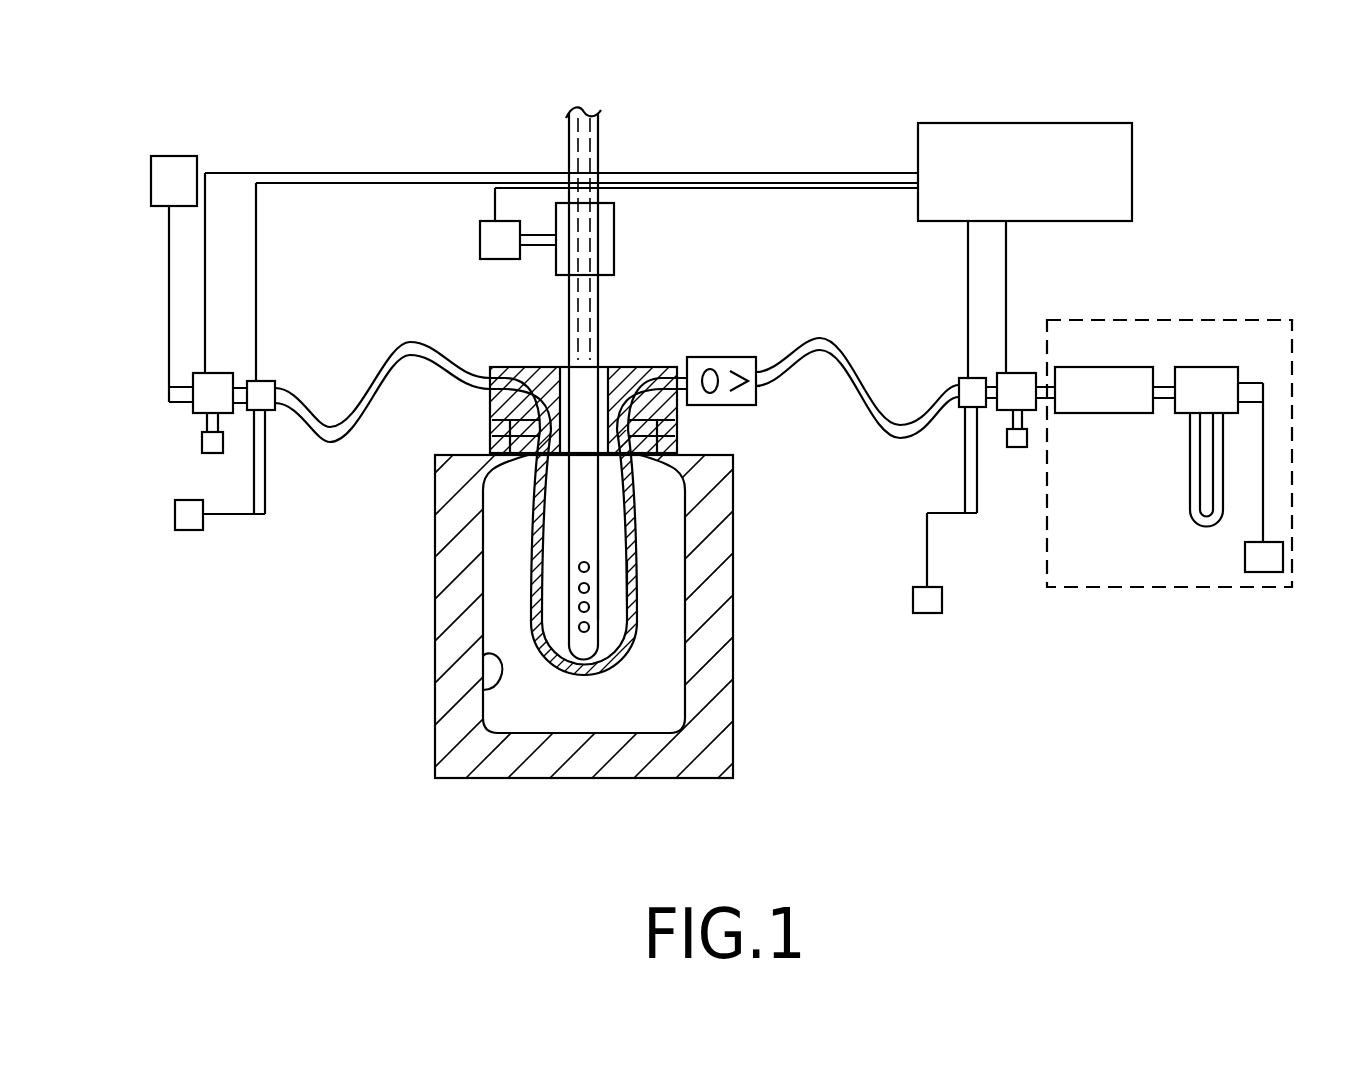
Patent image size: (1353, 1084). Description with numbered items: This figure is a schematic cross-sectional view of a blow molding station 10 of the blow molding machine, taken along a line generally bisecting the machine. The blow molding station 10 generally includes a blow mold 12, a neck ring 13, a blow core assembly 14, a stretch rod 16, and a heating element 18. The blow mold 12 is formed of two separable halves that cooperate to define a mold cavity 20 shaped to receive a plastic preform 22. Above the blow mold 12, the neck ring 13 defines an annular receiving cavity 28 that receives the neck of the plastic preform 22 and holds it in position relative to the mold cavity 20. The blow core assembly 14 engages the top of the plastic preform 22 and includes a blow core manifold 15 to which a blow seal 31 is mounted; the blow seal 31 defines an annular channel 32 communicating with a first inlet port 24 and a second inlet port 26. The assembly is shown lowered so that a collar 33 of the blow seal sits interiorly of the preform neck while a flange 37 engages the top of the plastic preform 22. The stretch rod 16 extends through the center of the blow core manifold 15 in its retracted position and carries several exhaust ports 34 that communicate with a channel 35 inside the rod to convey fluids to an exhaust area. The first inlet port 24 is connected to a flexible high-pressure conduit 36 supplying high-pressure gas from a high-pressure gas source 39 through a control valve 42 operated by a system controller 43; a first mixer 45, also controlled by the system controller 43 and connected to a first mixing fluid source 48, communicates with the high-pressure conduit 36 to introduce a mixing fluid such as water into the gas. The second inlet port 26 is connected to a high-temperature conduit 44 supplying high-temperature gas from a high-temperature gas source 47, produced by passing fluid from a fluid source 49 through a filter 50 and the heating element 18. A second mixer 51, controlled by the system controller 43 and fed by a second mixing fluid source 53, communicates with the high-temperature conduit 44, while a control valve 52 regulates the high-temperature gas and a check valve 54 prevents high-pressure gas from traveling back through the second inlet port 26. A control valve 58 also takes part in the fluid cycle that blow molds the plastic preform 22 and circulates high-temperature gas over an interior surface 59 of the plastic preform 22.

The blow molding station 10 is at (683, 152).
The blow mold 12 is at (423, 648).
The neck ring 13 is at (495, 440).
The blow core assembly 14 is at (541, 362).
The blow core manifold 15 is at (672, 360).
The stretch rod 16 is at (614, 606).
The heating element 18 is at (1103, 367).
The mold cavity 20 is at (483, 700).
The plastic preform 22 is at (530, 560).
The first inlet port 24 is at (480, 366).
The second inlet port 26 is at (715, 356).
The annular receiving cavity 28 is at (680, 447).
The blow seal 31 is at (680, 420).
The annular channel 32 is at (545, 365).
The collar 33 is at (622, 367).
The exhaust ports 34 is at (588, 632).
The channel 35 is at (572, 135).
The high-pressure conduit 36 is at (395, 350).
The flange 37 is at (500, 408).
The high-pressure gas source 39 is at (180, 156).
The control valve 42 is at (193, 432).
The system controller 43 is at (1132, 138).
The high-temperature conduit 44 is at (825, 340).
The first mixer 45 is at (262, 380).
The high-temperature gas source 47 is at (1047, 565).
The first mixing fluid source 48 is at (188, 532).
The fluid source 49 is at (1245, 557).
The filter 50 is at (1203, 367).
The second mixer 51 is at (960, 382).
The control valve 52 is at (1018, 373).
The second mixing fluid source 53 is at (913, 600).
The check valve 54 is at (758, 392).
The control valve 58 is at (480, 238).
The interior surface 59 is at (625, 565).